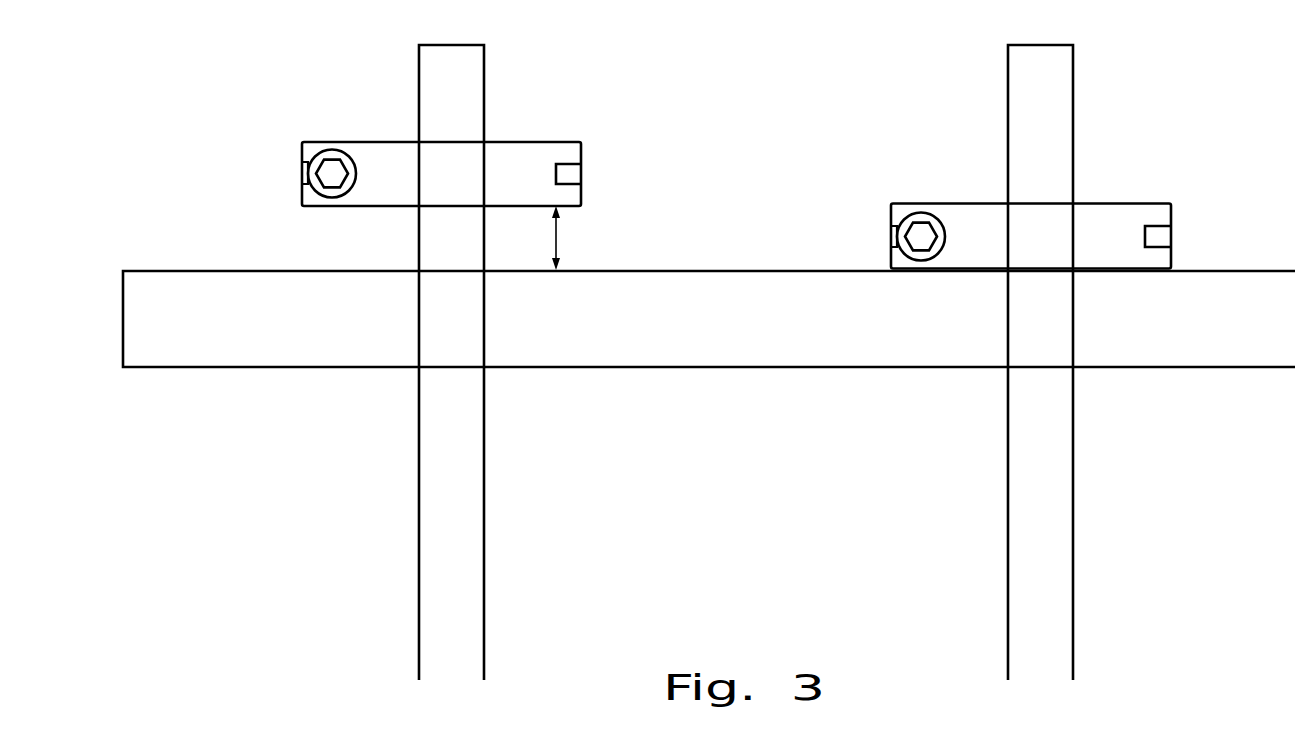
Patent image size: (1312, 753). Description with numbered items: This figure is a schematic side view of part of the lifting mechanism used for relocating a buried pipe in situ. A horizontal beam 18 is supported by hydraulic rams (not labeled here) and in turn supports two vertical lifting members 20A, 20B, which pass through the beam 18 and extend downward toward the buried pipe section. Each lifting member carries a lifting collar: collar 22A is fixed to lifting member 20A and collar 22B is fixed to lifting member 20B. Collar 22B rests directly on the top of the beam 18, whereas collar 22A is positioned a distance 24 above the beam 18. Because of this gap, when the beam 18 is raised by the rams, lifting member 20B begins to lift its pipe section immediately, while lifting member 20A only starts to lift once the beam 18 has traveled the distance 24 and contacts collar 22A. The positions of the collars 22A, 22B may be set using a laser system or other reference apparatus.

The beam 18 is at (763, 269).
The lifting member 20A is at (484, 63).
The lifting member 20B is at (1073, 73).
The lifting collar 22A is at (563, 142).
The lifting collar 22B is at (1131, 203).
The distance 24 is at (556, 238).